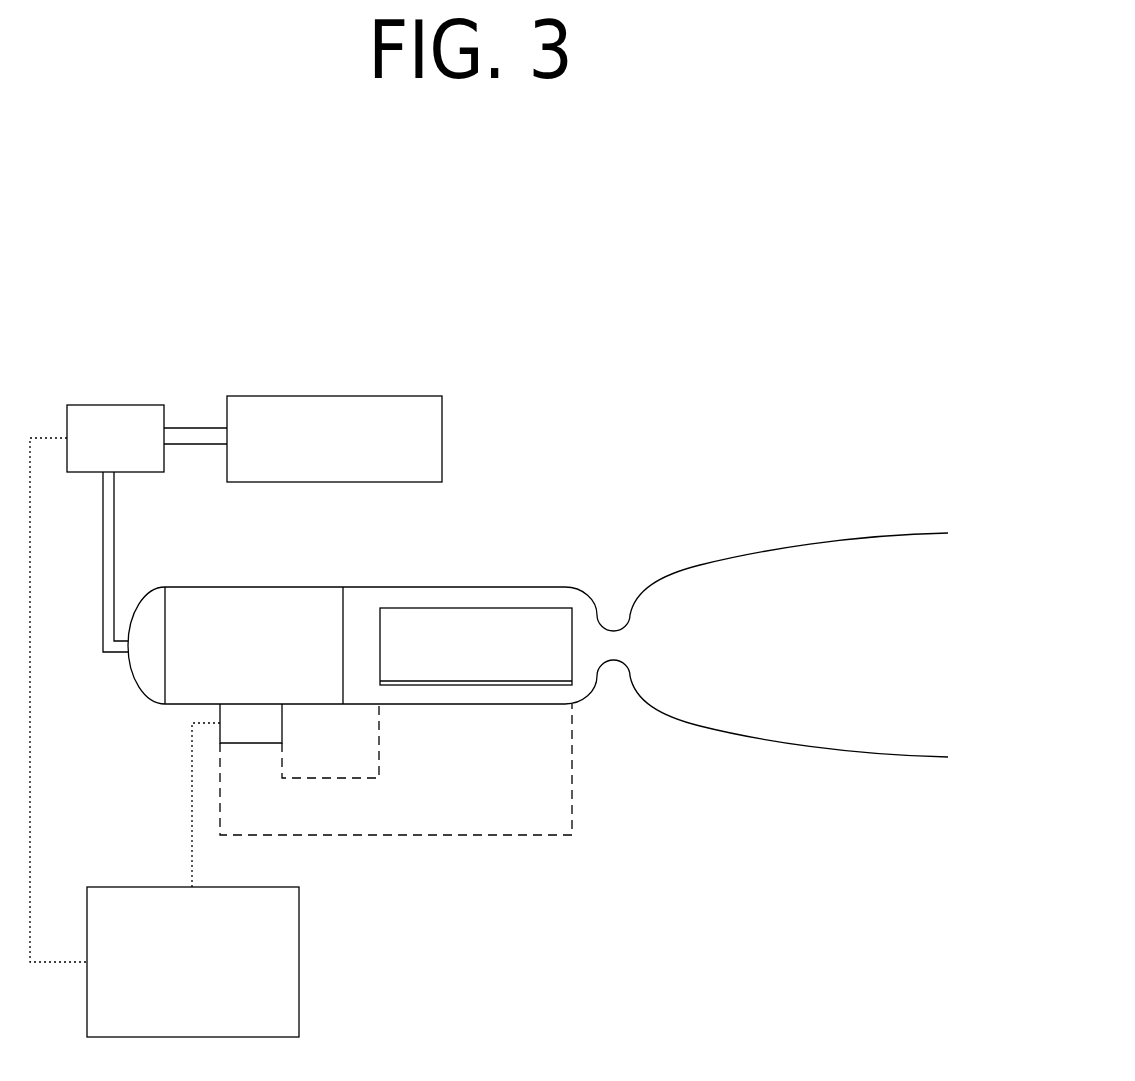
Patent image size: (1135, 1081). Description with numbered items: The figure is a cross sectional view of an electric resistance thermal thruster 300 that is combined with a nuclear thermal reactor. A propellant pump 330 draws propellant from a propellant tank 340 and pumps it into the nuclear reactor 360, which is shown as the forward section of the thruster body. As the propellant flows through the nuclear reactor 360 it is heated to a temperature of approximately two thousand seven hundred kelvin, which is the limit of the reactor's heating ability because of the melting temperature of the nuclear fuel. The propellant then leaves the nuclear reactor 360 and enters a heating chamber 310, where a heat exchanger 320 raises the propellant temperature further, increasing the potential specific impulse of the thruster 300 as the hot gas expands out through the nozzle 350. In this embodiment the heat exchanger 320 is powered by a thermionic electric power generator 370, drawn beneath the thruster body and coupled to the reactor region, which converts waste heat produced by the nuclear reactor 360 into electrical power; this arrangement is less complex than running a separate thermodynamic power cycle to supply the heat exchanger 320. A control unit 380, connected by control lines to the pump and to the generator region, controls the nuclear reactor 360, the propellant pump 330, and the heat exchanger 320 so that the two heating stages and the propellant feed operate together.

The electric resistance thermal thruster 300 is at (165, 162).
The heating chamber 310 is at (463, 587).
The heat exchanger 320 is at (477, 607).
The propellant pump 330 is at (117, 403).
The propellant tank 340 is at (335, 395).
The nozzle 350 is at (847, 537).
The nuclear reactor 360 is at (262, 617).
The thermionic electric power generator 370 is at (218, 710).
The control unit 380 is at (300, 962).